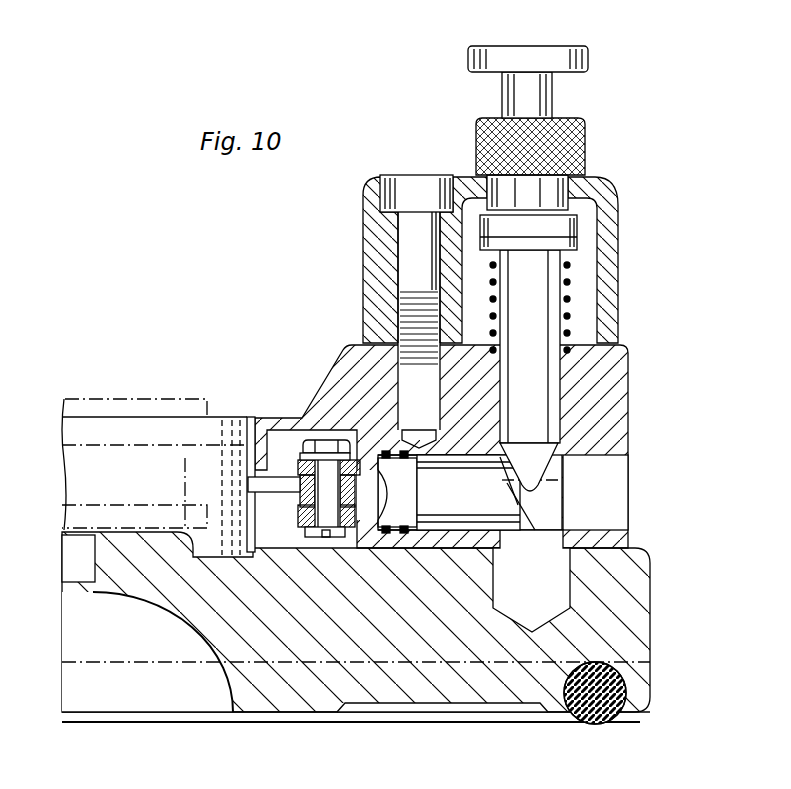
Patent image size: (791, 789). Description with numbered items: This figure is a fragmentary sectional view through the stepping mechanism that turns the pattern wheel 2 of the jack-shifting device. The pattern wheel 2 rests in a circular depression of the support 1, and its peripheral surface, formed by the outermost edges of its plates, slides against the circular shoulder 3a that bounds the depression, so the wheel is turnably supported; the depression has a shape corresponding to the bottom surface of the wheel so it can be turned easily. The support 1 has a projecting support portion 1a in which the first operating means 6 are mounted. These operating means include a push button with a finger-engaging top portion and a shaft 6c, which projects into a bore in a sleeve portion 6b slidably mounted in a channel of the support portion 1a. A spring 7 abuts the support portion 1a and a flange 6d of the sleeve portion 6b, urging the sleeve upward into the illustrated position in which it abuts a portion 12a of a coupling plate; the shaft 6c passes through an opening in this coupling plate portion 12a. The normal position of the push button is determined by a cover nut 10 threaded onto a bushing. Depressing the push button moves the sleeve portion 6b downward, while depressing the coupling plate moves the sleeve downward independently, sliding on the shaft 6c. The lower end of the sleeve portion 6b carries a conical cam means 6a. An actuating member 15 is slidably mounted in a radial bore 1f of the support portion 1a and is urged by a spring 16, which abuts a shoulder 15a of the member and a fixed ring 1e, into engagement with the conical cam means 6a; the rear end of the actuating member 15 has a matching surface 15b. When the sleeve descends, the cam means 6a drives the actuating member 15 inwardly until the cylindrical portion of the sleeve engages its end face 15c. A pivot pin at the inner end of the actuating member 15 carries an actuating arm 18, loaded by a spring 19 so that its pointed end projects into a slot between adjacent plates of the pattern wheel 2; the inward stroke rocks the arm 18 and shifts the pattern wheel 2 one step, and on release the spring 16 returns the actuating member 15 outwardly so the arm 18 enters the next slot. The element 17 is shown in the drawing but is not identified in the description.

The support 1 is at (312, 690).
The support portion 1a is at (628, 380).
The fixed ring 1e is at (386, 545).
The radial bore 1f is at (406, 545).
The pattern wheel 2 is at (151, 400).
The circular shoulder 3a is at (251, 427).
The first operating means 6 is at (586, 46).
The conical cam means 6a is at (557, 456).
The sleeve portion 6b is at (540, 339).
The shaft 6c is at (553, 107).
The flange 6d is at (578, 247).
The spring 7 is at (573, 288).
The cover nut 10 is at (580, 148).
The coupling plate portion 12a is at (578, 226).
The actuating member 15 is at (492, 497).
The shoulder 15a is at (388, 512).
The rear end surface 15b is at (548, 470).
The end face 15c is at (551, 535).
The spring 16 is at (418, 515).
The nut 17 is at (320, 439).
The actuating arm 18 is at (252, 485).
The spring 19 is at (300, 492).